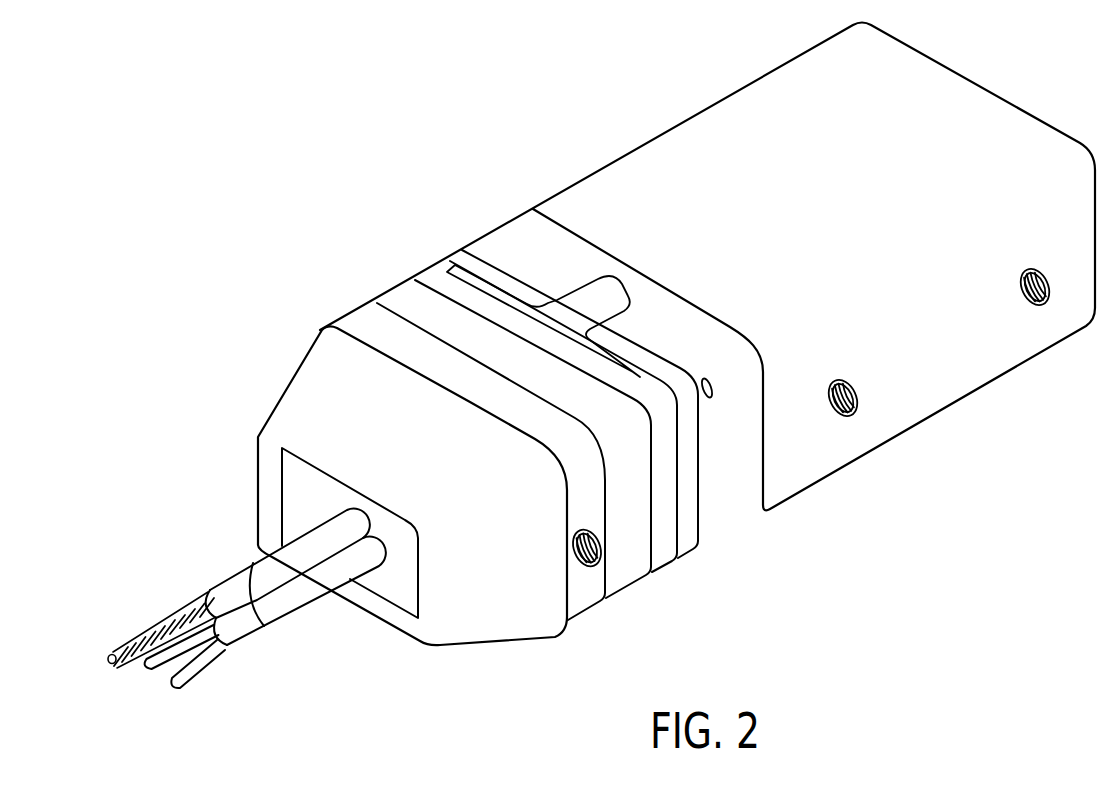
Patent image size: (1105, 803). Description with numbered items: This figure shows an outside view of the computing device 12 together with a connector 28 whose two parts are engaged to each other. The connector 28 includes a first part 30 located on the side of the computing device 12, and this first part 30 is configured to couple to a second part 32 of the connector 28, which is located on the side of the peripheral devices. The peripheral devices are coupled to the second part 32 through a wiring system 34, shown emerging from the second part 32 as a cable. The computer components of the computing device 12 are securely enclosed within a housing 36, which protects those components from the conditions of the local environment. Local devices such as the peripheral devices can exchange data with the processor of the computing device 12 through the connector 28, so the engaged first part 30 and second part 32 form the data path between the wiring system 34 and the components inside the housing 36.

The computing device 12 is at (707, 267).
The connector 28 is at (449, 399).
The first part 30 is at (508, 248).
The second part 32 is at (318, 392).
The wiring system 34 is at (226, 579).
The housing 36 is at (846, 223).